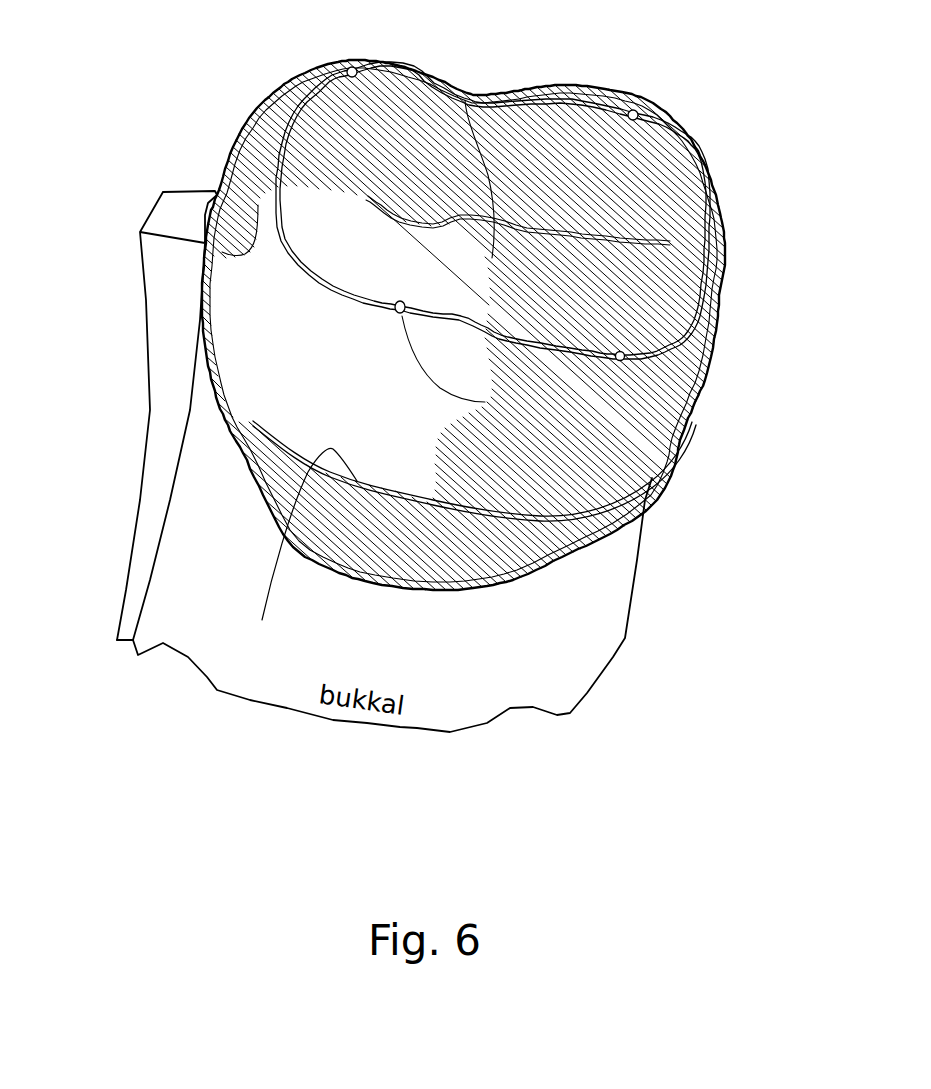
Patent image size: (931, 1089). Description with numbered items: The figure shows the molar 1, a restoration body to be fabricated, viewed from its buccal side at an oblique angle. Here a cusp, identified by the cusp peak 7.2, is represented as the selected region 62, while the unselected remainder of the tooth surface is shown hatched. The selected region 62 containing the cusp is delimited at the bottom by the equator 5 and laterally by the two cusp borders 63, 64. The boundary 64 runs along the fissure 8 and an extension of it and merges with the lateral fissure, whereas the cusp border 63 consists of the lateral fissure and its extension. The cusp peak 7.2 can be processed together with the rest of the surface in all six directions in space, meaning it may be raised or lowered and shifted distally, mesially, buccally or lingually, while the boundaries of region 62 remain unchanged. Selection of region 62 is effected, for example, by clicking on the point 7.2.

The molar 1 is at (694, 80).
The fissure 8 is at (274, 200).
The cusp border 64 is at (193, 193).
The selected region 62 is at (266, 375).
The equator 5 is at (262, 620).
The cusp peak 7.2 is at (646, 440).
The cusp border 63 is at (604, 518).